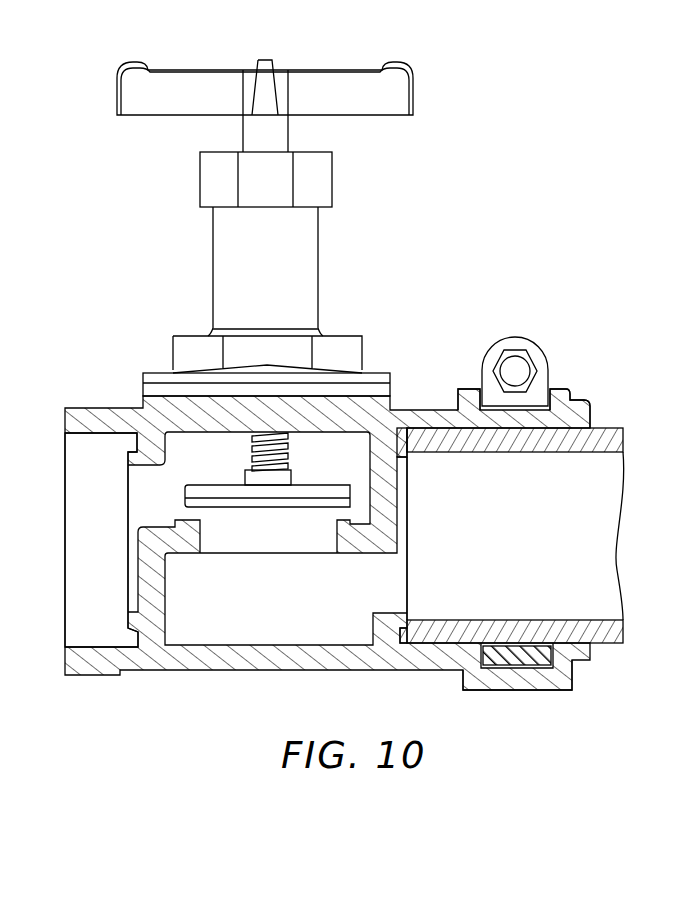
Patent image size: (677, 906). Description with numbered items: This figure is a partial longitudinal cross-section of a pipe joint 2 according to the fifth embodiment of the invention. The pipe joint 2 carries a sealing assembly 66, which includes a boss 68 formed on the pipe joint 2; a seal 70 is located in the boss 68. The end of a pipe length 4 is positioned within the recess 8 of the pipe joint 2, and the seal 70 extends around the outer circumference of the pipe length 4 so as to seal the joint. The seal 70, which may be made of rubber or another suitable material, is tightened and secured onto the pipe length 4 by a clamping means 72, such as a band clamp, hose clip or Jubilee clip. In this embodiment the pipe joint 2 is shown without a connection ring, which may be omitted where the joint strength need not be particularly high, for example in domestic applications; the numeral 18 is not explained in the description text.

The pipe joint 2 is at (218, 681).
The pipe length 4 is at (615, 645).
The recess 8 is at (77, 538).
The mounting foot 18 is at (527, 696).
The sealing assembly 66 is at (556, 360).
The boss 68 is at (463, 388).
The seal 70 is at (508, 642).
The clamping means 72 is at (504, 344).